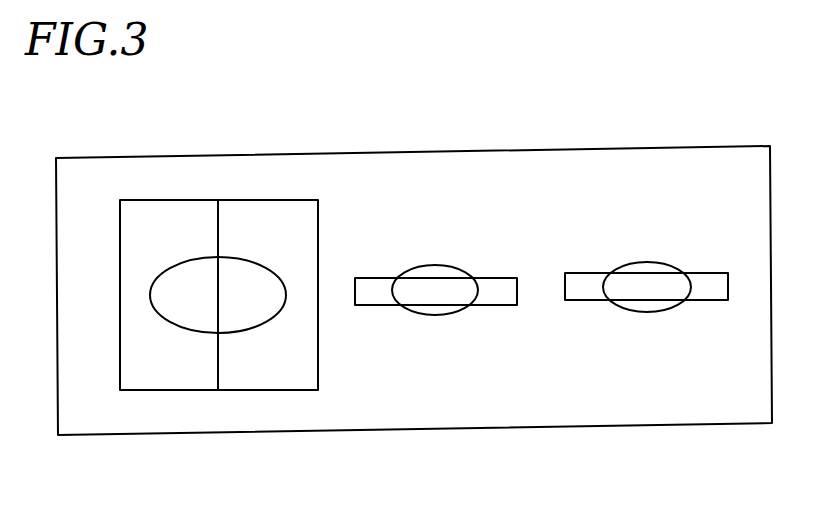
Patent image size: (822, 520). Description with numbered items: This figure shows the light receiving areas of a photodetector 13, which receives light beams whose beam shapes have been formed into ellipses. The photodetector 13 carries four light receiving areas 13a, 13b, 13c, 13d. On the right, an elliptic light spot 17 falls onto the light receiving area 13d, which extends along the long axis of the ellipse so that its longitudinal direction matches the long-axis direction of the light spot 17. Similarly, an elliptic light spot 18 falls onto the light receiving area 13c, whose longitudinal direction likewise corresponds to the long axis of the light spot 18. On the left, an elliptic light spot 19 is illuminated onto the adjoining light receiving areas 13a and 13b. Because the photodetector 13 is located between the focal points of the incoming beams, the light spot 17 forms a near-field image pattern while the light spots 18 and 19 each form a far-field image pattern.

The photodetector 13 is at (435, 163).
The light receiving area 13a is at (173, 218).
The light receiving area 13b is at (288, 212).
The light receiving area 13c is at (497, 287).
The light receiving area 13d is at (708, 280).
The light spot 17 is at (655, 310).
The light spot 18 is at (440, 312).
The light spot 19 is at (248, 322).